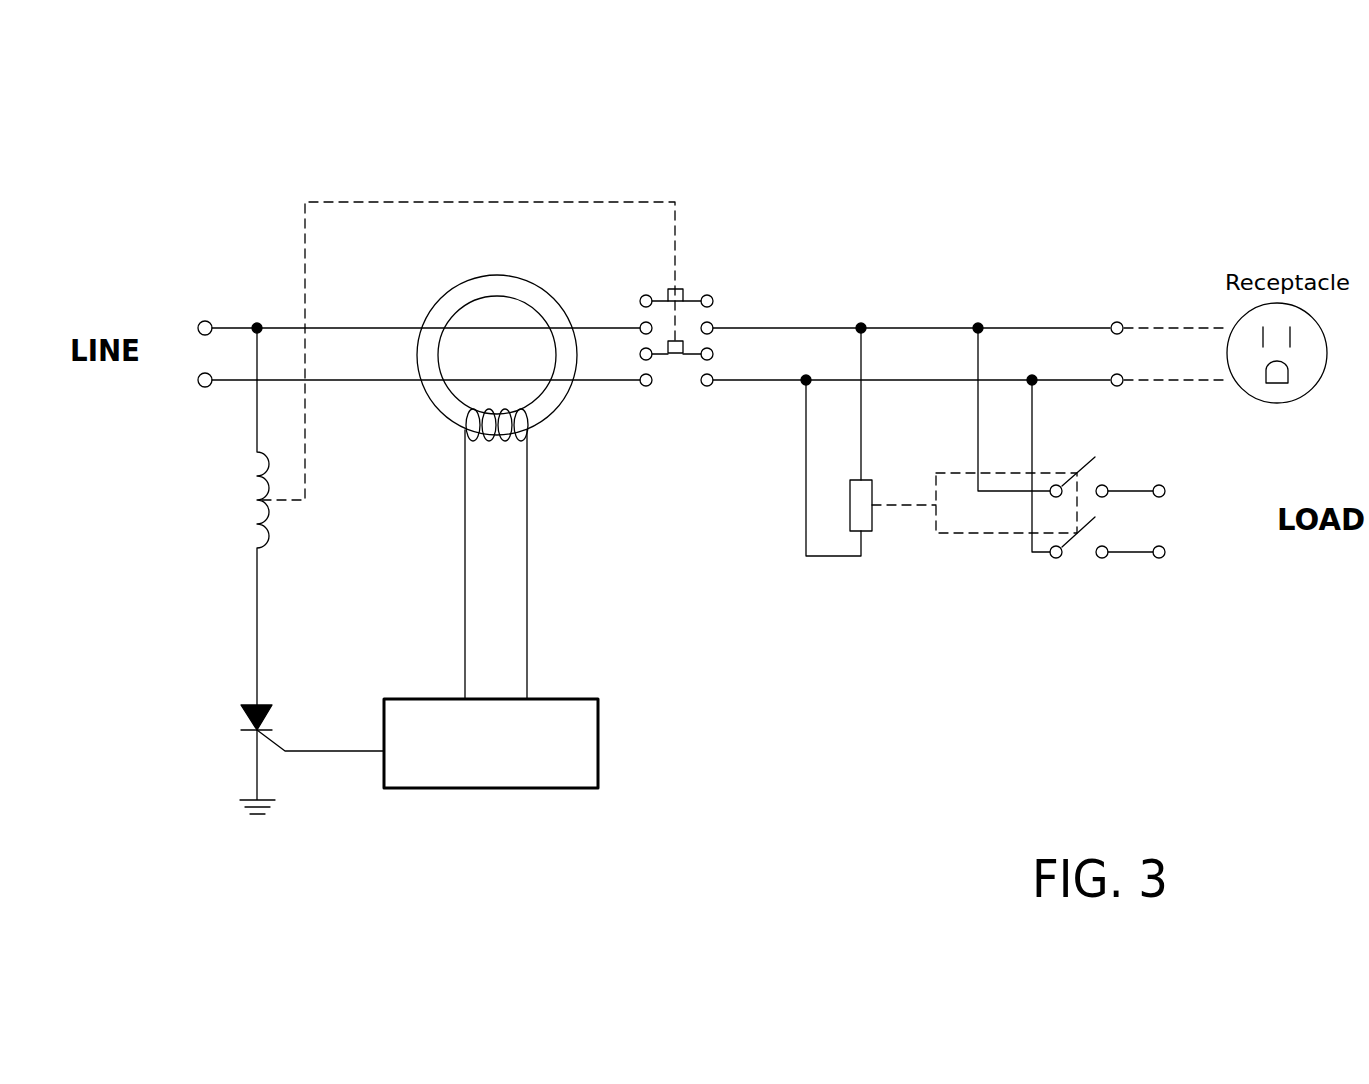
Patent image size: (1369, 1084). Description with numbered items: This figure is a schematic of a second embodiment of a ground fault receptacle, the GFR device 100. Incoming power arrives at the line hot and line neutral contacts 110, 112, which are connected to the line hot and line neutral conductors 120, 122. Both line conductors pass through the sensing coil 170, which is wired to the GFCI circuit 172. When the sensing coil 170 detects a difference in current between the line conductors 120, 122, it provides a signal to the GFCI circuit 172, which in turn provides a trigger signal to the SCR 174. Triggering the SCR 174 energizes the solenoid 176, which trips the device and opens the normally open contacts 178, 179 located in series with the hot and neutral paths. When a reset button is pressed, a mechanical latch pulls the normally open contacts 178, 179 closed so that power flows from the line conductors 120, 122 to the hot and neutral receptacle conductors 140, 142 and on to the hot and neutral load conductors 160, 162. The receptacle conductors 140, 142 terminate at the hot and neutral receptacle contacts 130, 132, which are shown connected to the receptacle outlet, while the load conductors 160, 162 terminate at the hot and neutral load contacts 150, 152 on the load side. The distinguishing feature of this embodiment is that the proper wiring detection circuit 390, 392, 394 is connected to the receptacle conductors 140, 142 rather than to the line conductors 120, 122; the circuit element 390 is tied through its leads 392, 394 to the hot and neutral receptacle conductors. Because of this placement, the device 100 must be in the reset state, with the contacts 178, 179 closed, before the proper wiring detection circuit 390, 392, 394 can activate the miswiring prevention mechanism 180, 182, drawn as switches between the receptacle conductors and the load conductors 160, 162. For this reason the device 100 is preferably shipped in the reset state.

The GFR device 100 is at (928, 210).
The line hot contact 110 is at (197, 328).
The line neutral contact 112 is at (197, 380).
The line hot conductor 120 is at (368, 322).
The line neutral conductor 122 is at (367, 386).
The hot receptacle contact 130 is at (1117, 322).
The neutral receptacle contact 132 is at (1117, 373).
The hot receptacle conductor 140 is at (790, 322).
The neutral receptacle conductor 142 is at (755, 386).
The hot load contact 150 is at (1161, 485).
The neutral load contact 152 is at (1160, 558).
The hot load conductor 160 is at (1130, 486).
The neutral load conductor 162 is at (1130, 554).
The sensing coil 170 is at (550, 295).
The GFCI circuit 172 is at (491, 743).
The SCR 174 is at (245, 714).
The solenoid 176 is at (252, 500).
The normally open contact 178 is at (695, 296).
The normally open contact 179 is at (678, 362).
The miswiring prevention mechanism 180 is at (1086, 458).
The miswiring prevention mechanism 182 is at (1068, 550).
The proper wiring detection circuit 390 is at (866, 533).
The proper wiring detection circuit 392 is at (861, 427).
The proper wiring detection circuit 394 is at (806, 505).